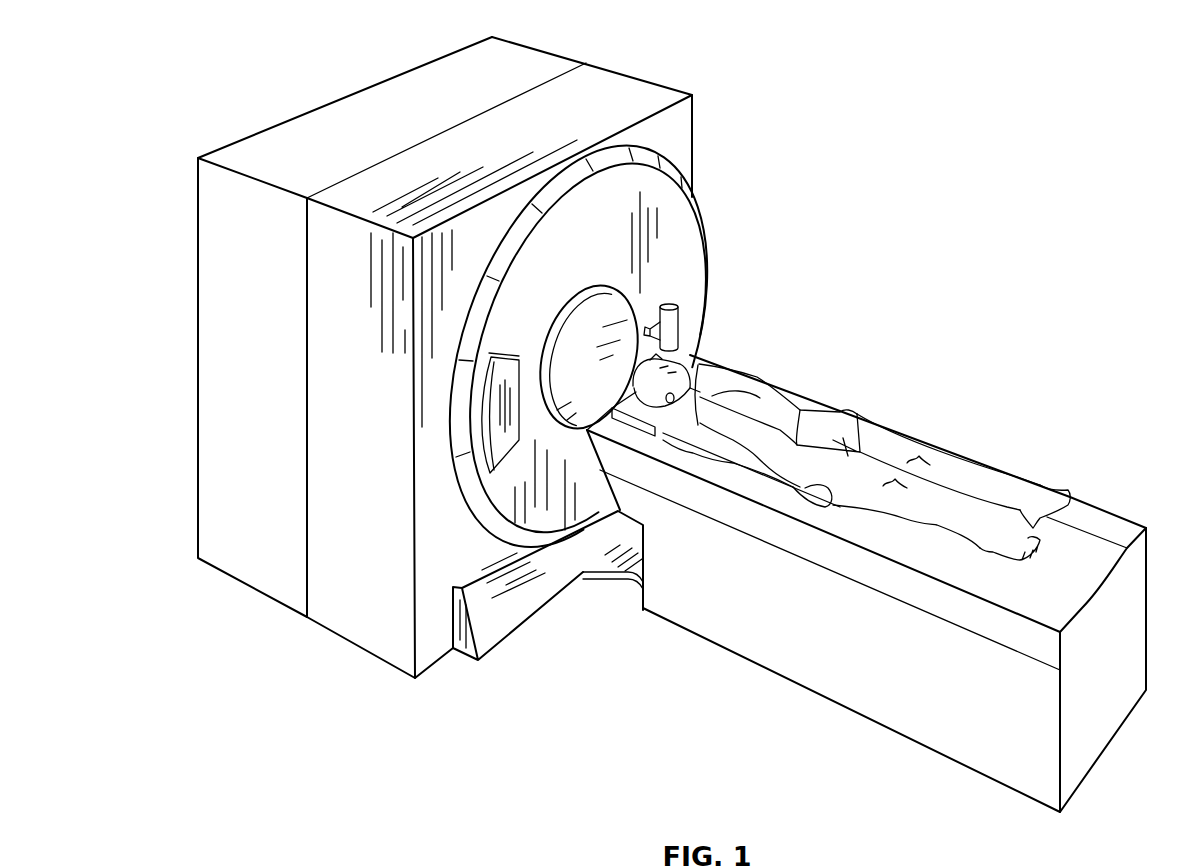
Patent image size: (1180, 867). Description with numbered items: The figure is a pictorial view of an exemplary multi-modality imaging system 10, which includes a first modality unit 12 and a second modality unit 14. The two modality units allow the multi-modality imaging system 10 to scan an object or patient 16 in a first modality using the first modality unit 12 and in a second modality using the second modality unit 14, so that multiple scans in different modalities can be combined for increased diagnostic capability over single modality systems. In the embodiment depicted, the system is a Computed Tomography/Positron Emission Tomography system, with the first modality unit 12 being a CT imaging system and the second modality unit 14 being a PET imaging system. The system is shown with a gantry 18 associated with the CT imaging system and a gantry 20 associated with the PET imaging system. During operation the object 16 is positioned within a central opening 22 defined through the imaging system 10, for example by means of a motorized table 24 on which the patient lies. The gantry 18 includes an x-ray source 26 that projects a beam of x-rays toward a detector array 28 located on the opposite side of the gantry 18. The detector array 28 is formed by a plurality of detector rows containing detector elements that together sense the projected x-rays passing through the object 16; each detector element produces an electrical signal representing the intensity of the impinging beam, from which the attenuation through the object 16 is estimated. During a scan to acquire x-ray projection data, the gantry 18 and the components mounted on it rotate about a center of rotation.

The multi-modality imaging system 10 is at (622, 601).
The first modality unit 12 is at (348, 623).
The second modality unit 14 is at (248, 572).
The object or patient 16 is at (780, 407).
The gantry 18 is at (682, 133).
The gantry 20 is at (248, 147).
The central opening 22 is at (587, 318).
The motorized table 24 is at (788, 662).
The x-ray source 26 is at (683, 326).
The detector array 28 is at (498, 453).